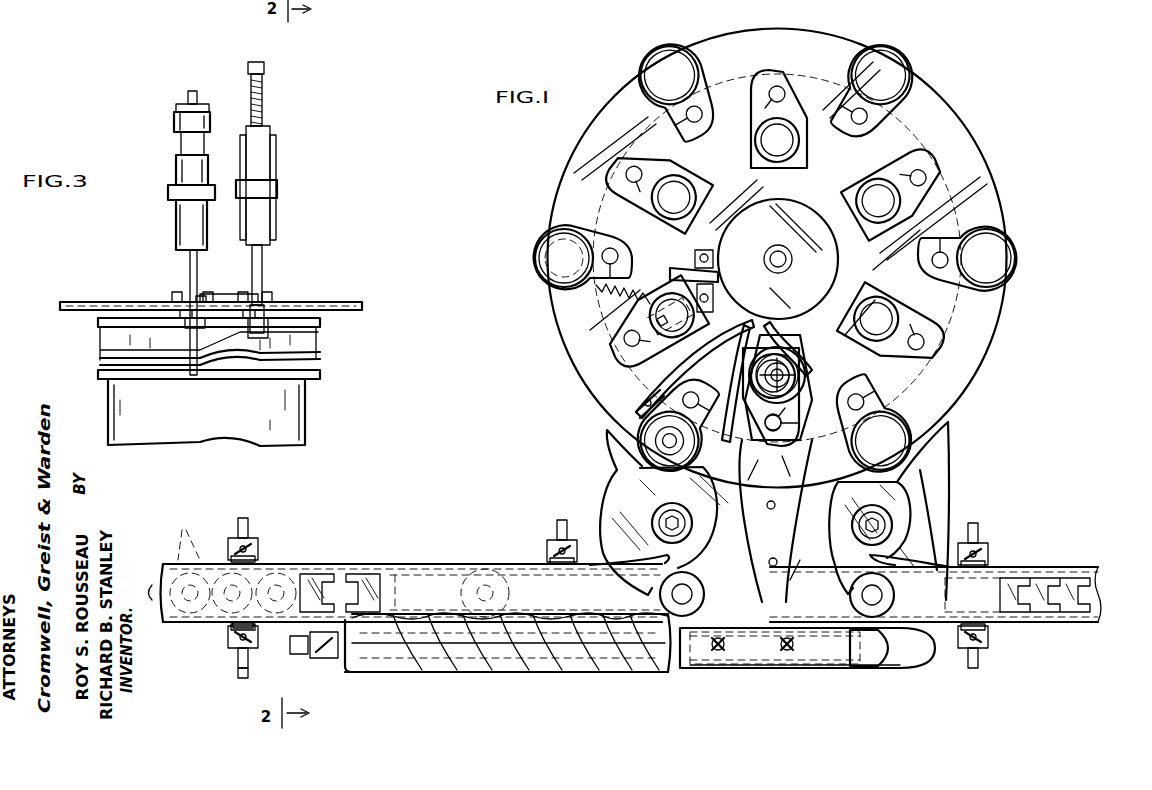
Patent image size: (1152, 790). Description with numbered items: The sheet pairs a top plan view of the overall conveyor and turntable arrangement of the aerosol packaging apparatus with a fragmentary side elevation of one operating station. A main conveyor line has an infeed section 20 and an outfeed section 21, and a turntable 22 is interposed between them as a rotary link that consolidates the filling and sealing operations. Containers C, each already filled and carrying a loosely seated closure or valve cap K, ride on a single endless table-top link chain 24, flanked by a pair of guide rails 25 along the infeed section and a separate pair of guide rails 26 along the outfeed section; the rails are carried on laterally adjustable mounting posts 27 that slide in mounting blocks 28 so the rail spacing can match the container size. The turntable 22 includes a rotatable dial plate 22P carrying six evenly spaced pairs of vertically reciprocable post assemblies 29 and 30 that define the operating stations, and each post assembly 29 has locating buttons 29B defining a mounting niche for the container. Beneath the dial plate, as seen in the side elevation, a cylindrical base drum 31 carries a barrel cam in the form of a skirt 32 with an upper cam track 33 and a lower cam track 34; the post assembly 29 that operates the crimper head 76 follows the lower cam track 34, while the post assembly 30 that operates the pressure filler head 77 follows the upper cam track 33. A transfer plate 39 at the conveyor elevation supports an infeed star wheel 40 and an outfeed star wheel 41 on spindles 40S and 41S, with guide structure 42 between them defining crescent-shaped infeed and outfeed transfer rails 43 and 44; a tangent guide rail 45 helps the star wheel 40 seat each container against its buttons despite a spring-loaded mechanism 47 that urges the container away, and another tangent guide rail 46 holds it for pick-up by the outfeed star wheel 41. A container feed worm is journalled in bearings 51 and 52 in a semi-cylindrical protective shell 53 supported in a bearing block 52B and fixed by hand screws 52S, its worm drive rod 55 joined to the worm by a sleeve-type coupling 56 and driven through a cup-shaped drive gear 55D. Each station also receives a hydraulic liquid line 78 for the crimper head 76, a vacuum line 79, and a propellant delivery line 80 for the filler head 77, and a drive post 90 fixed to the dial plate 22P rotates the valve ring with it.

In FIG. 1, the infeed section 20 is at (280, 560).
In FIG. 1, the outfeed section 21 is at (1046, 560).
In FIG. 1, the turntable 22 is at (1008, 312).
In FIG. 3, the dial plate 22P is at (330, 302).
In FIG. 1, the link chain 24 is at (340, 572).
In FIG. 1, the guide rails 25 is at (158, 572).
In FIG. 1, the guide rails 26 is at (1100, 610).
In FIG. 1, the mounting posts 27 is at (236, 632).
In FIG. 1, the mounting blocks 28 is at (240, 662).
In FIG. 3, the post assembly 29 is at (180, 263).
In FIG. 3, the locating buttons 29B is at (170, 296).
In FIG. 3, the post assembly 30 is at (266, 248).
In FIG. 3, the base drum 31 is at (300, 412).
In FIG. 3, the skirt 32 is at (322, 362).
In FIG. 3, the cam track 33 is at (92, 342).
In FIG. 3, the cam track 34 is at (92, 376).
In FIG. 1, the transfer plate 39 is at (790, 535).
In FIG. 1, the infeed star wheel 40 is at (636, 500).
In FIG. 1, the spindle 40S is at (694, 526).
In FIG. 1, the outfeed star wheel 41 is at (906, 500).
In FIG. 1, the spindle 41S is at (892, 526).
In FIG. 1, the guide structure 42 is at (781, 594).
In FIG. 1, the infeed transfer rail 43 is at (756, 492).
In FIG. 1, the outfeed transfer rail 44 is at (796, 480).
In FIG. 1, the tangent guide rail 45 is at (612, 446).
In FIG. 1, the tangent guide rail 46 is at (943, 434).
In FIG. 1, the spring-loaded mechanism 47 is at (606, 300).
In FIG. 3, the spring-loaded mechanism 47 is at (230, 288).
In FIG. 1, the bearing 51 is at (322, 660).
In FIG. 1, the bearing 52 is at (746, 676).
In FIG. 1, the bearing block 52B is at (726, 660).
In FIG. 1, the hand screws 52S is at (714, 650).
In FIG. 1, the protective shell 53 is at (528, 672).
In FIG. 1, the worm drive rod 55 is at (760, 630).
In FIG. 1, the drive gear 55D is at (832, 650).
In FIG. 1, the sleeve-type coupling 56 is at (706, 620).
In FIG. 1, the crimper head 76 is at (650, 62).
In FIG. 3, the crimper head 76 is at (174, 176).
In FIG. 1, the pressure filler head 77 is at (806, 360).
In FIG. 3, the pressure filler head 77 is at (272, 162).
In FIG. 1, the hydraulic liquid line 78 is at (740, 378).
In FIG. 1, the vacuum line 79 is at (650, 378).
In FIG. 1, the propellant delivery line 80 is at (796, 342).
In FIG. 1, the drive post 90 is at (716, 278).
In FIG. 1, the closure K is at (190, 615).
In FIG. 1, the containers C is at (511, 585).